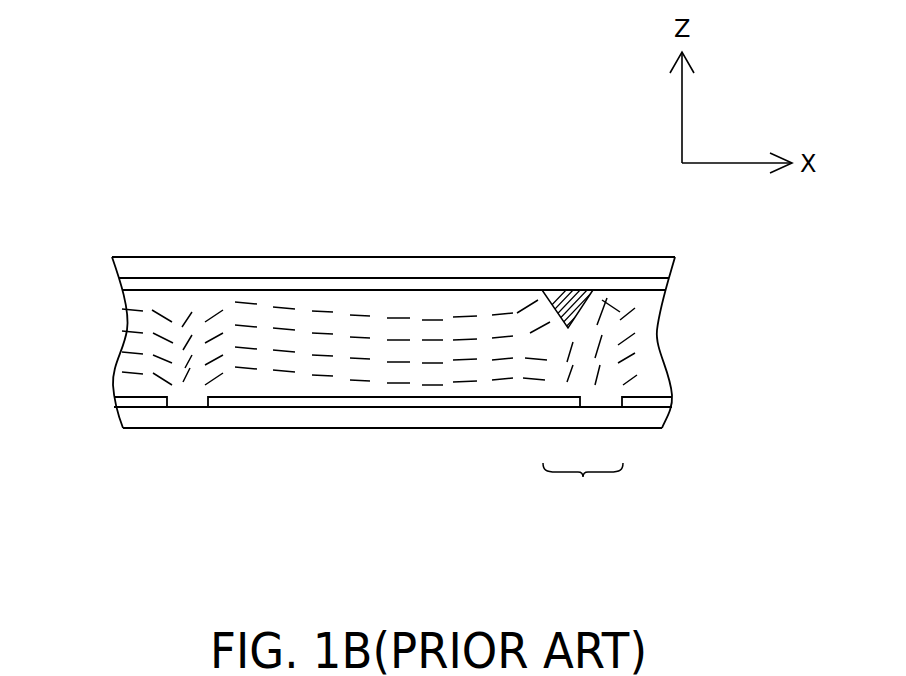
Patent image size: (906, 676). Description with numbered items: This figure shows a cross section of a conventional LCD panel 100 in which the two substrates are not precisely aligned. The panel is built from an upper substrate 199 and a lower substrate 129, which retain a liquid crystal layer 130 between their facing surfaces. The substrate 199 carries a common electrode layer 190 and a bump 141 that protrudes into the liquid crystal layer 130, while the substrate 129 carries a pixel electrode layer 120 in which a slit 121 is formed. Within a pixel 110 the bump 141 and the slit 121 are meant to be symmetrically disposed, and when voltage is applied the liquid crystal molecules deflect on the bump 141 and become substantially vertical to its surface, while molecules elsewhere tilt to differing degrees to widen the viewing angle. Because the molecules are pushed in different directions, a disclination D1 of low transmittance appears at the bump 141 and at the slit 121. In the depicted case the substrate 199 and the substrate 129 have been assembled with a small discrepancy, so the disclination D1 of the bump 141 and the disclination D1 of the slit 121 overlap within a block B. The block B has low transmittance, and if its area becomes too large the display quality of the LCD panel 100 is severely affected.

The LCD panel 100 is at (88, 63).
The pixel 110 is at (652, 280).
The substrate 199 is at (672, 270).
The common electrode layer 190 is at (665, 288).
The liquid crystal layer 130 is at (657, 328).
The bump 141 is at (582, 290).
The slit 121 is at (188, 390).
The pixel electrode layer 120 is at (668, 398).
The substrate 129 is at (663, 421).
The disclination D1 is at (188, 398).
The block B is at (583, 487).